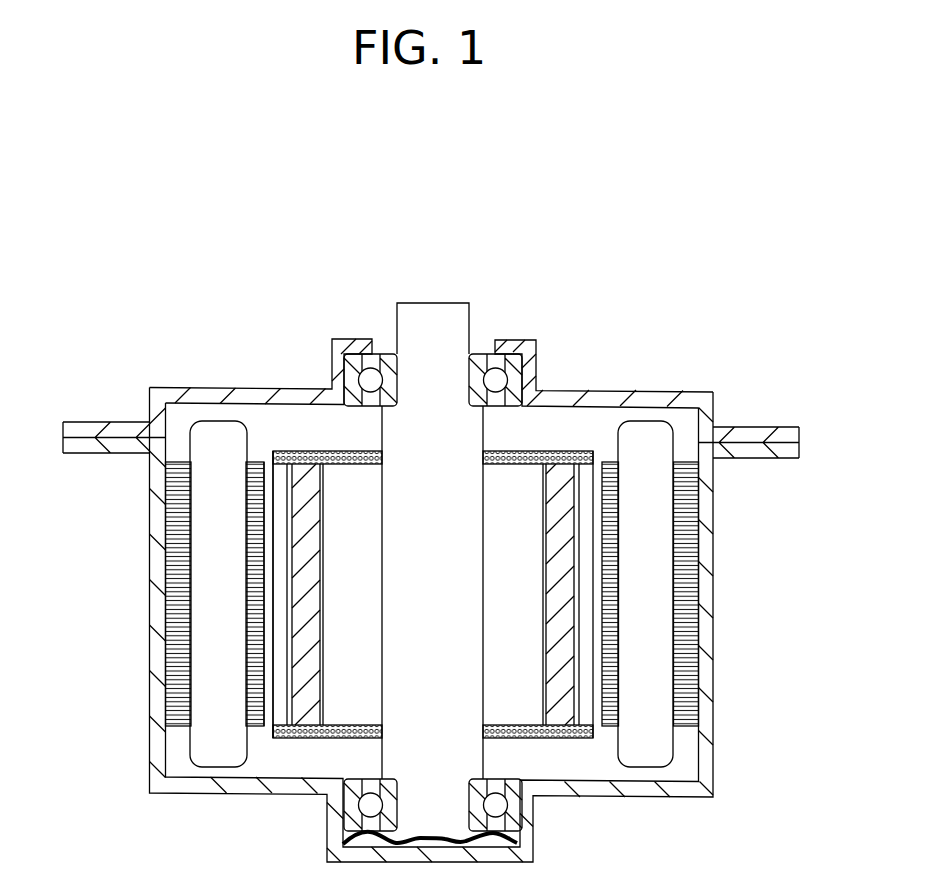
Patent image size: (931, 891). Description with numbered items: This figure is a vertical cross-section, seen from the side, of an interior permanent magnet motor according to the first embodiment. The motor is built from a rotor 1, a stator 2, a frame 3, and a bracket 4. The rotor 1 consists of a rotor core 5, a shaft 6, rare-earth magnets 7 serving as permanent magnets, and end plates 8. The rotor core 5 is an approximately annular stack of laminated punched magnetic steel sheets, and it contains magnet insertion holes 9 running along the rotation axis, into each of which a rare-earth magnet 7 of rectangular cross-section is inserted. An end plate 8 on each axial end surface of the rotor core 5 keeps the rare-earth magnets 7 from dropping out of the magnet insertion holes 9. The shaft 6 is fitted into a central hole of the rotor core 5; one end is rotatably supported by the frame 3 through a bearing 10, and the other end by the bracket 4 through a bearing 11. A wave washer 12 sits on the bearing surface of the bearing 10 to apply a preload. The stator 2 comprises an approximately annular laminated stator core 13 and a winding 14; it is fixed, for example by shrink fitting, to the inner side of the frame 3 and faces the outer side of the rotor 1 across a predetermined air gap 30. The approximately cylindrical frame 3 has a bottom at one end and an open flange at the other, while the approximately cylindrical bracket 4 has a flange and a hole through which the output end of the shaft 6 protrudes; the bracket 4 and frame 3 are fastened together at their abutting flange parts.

The rotor 1 is at (796, 504).
The stator 2 is at (52, 528).
The frame 3 is at (706, 770).
The bracket 4 is at (708, 398).
The rotor core 5 is at (583, 532).
The shaft 6 is at (465, 572).
The rare-earth magnet 7 is at (563, 615).
The end plate 8 is at (590, 735).
The magnet insertion hole 9 is at (575, 680).
The bearing 10 is at (517, 807).
The bearing 11 is at (515, 382).
The wave washer 12 is at (520, 839).
The stator core 13 is at (185, 567).
The winding 14 is at (207, 626).
The air gap 30 is at (268, 694).